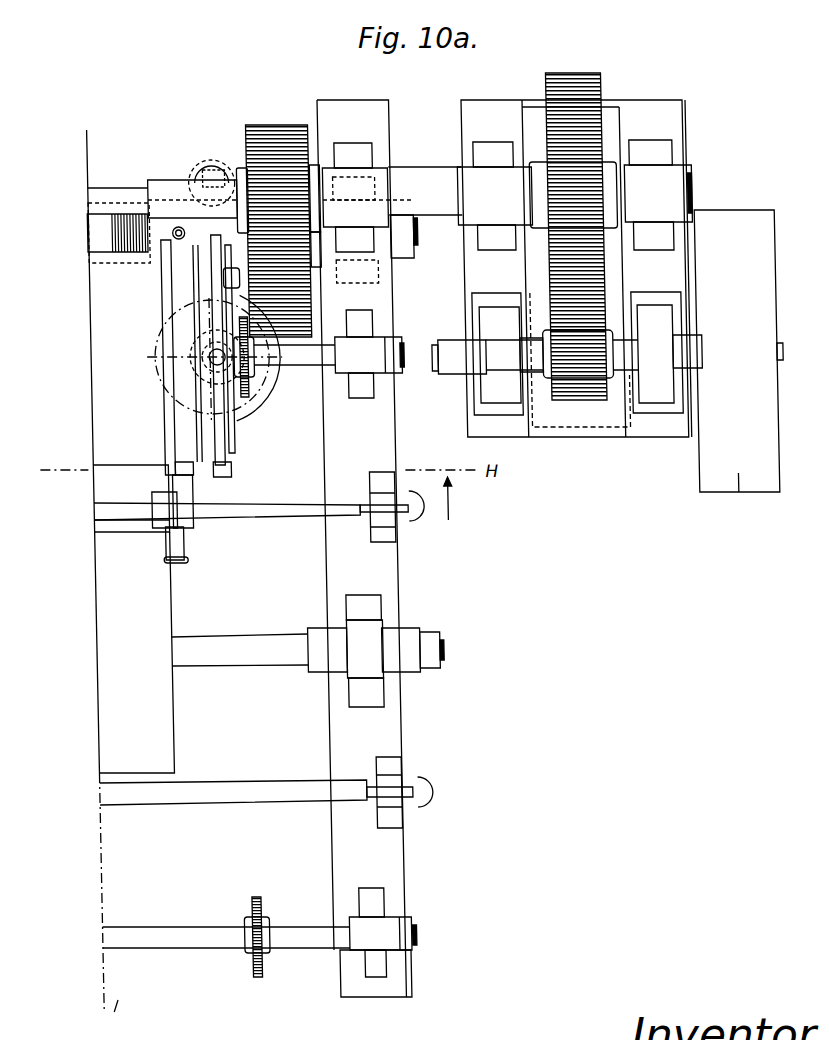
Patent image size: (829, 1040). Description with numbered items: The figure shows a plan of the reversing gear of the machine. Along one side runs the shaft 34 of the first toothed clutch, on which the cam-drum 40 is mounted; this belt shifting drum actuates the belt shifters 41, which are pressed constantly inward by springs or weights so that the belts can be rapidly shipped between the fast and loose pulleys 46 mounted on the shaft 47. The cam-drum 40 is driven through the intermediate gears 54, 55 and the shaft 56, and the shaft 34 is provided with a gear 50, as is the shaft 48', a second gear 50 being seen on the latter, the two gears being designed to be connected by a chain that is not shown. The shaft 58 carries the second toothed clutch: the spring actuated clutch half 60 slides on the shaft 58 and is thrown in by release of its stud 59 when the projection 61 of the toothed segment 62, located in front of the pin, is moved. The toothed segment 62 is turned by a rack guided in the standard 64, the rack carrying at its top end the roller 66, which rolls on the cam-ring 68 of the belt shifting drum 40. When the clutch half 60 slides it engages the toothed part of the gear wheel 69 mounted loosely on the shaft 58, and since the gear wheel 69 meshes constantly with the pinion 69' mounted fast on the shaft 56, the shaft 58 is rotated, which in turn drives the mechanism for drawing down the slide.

The shaft 34 is at (301, 355).
The cam-drum 40 is at (119, 450).
The belt shifters 41 is at (176, 547).
The fast and loose pulleys 46 is at (138, 725).
The shaft 47 is at (230, 650).
The shaft 48' is at (260, 936).
The gear 50 is at (237, 395).
The intermediate gear 54 is at (577, 397).
The intermediate gear 55 is at (573, 102).
The shaft 56 is at (424, 197).
The shaft 58 is at (86, 236).
The stud 59 is at (174, 223).
The clutch half 60 is at (161, 226).
The projection 61 is at (193, 200).
The toothed segment 62 is at (256, 307).
The standard 64 is at (202, 357).
The roller 66 is at (197, 339).
The cam-ring 68 is at (214, 468).
The gear wheel 69 is at (273, 219).
The pinion 69' is at (331, 191).